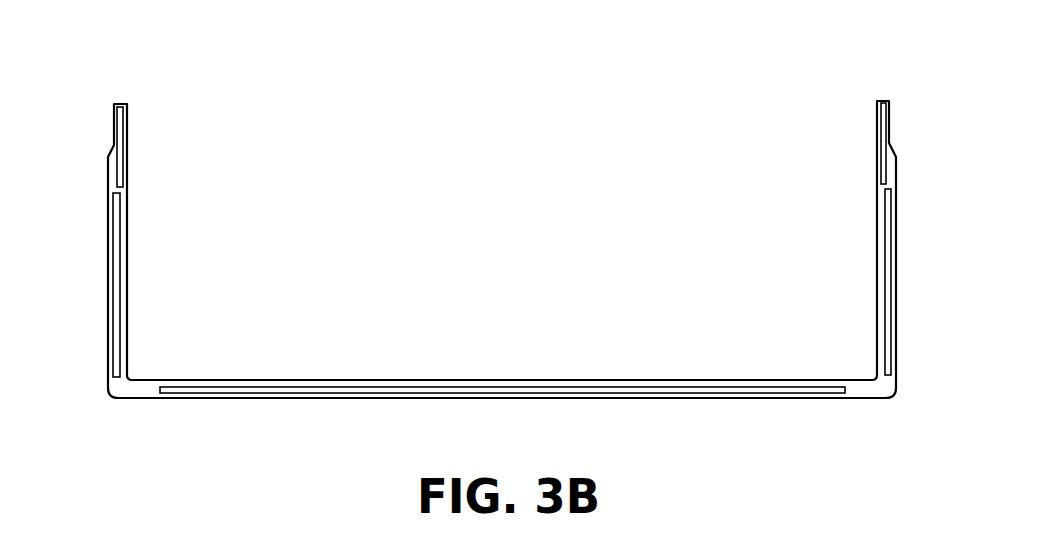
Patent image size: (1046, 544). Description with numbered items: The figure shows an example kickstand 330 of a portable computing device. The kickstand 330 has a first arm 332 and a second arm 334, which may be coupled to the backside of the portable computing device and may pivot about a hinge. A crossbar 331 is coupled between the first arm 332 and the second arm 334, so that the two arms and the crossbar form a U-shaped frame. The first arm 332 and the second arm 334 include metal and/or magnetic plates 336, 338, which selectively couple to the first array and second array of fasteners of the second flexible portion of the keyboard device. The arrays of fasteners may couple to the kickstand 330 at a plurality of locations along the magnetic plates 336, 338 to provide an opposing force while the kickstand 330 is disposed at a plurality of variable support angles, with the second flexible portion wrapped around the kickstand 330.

The kickstand 330 is at (836, 55).
The crossbar 331 is at (612, 390).
The first arm 332 is at (888, 172).
The second arm 334 is at (116, 172).
The magnetic plate 336 is at (113, 286).
The magnetic plate 338 is at (887, 245).